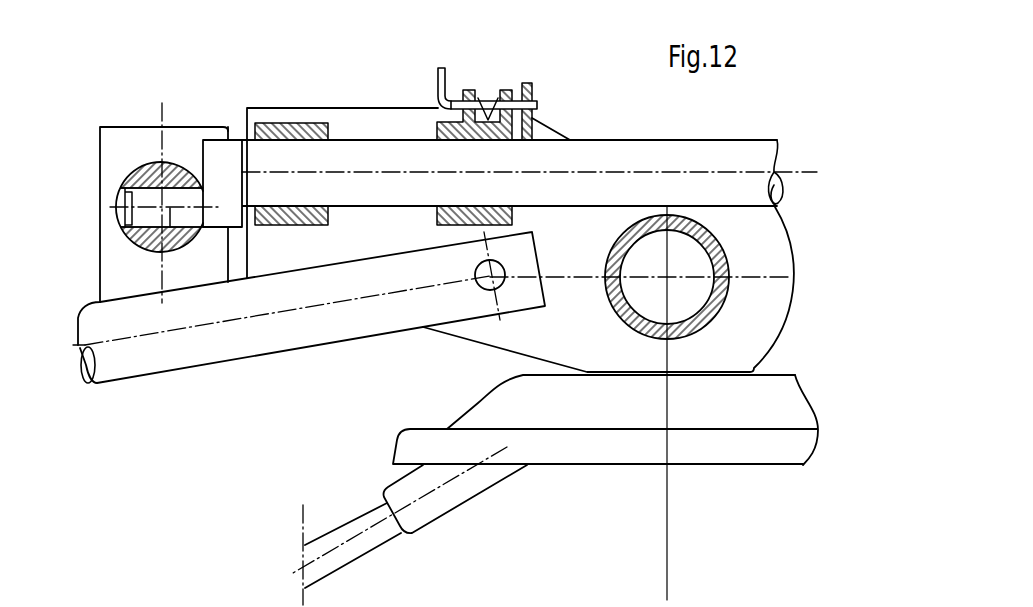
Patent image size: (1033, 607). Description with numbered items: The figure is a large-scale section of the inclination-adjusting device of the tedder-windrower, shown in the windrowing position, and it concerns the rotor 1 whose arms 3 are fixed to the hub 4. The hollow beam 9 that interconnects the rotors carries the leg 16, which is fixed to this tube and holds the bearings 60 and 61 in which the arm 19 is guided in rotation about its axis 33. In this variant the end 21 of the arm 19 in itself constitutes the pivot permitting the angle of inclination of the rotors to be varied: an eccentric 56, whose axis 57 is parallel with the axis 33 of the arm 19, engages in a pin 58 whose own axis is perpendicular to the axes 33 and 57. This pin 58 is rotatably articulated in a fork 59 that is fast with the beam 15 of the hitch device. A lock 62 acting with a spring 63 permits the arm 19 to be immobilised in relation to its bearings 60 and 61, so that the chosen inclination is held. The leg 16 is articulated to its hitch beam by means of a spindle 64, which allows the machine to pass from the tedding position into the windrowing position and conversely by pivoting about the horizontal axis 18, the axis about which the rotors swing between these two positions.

The rotor 1 is at (591, 473).
The arms 3 is at (495, 484).
The hub 4 is at (490, 412).
The hollow beam 9 is at (714, 239).
The beam 15 is at (287, 283).
The leg 16 is at (780, 258).
The horizontal axis 18 is at (488, 289).
The arm 19 is at (679, 134).
The end of the arm 21 is at (370, 157).
The axis of the arm 33 is at (633, 170).
The eccentric 56 is at (121, 218).
The axis of the eccentric 57 is at (174, 246).
The pin 58 is at (133, 180).
The fork 59 is at (127, 137).
The bearing 60 is at (293, 130).
The bearing 61 is at (453, 226).
The lock 62 is at (531, 98).
The spring 63 is at (488, 100).
The spindle 64 is at (477, 275).